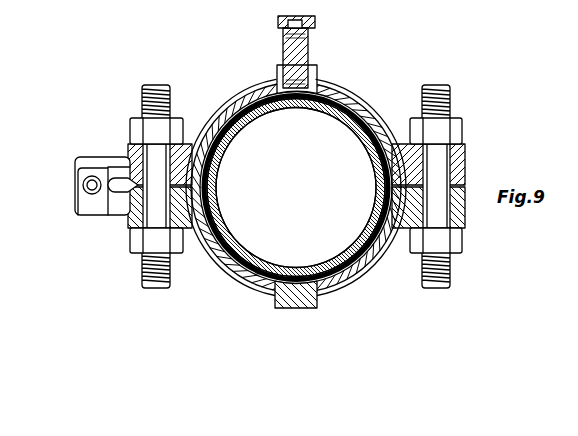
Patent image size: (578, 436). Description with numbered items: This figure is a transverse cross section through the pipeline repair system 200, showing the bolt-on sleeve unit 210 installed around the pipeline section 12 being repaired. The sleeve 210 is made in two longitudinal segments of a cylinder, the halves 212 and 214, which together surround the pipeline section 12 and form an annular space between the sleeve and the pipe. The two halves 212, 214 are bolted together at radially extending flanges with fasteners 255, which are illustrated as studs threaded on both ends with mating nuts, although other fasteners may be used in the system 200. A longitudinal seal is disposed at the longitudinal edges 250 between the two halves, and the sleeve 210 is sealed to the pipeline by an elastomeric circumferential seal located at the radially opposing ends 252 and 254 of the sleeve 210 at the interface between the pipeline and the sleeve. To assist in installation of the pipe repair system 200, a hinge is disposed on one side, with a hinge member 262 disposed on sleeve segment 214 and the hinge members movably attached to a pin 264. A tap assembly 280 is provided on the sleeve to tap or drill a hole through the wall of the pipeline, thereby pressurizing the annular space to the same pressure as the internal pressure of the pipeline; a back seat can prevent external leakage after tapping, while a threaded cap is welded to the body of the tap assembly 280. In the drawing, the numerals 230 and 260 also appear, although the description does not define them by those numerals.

The pipeline section 12 is at (240, 118).
The pipeline repair system 200 is at (410, 72).
The bolt-on sleeve unit 210 is at (243, 79).
The sleeve half 212 is at (364, 102).
The sleeve half 214 is at (364, 268).
The inner liner 230 is at (232, 275).
The longitudinal edges 250 is at (296, 176).
The radially opposing end of the sleeve 252 is at (420, 167).
The radially opposing end of the sleeve 254 is at (410, 213).
The fasteners 255 is at (155, 290).
The nut 260 is at (246, 128).
The hinge member 262 is at (95, 217).
The pin 264 is at (95, 155).
The tap assembly 280 is at (322, 31).